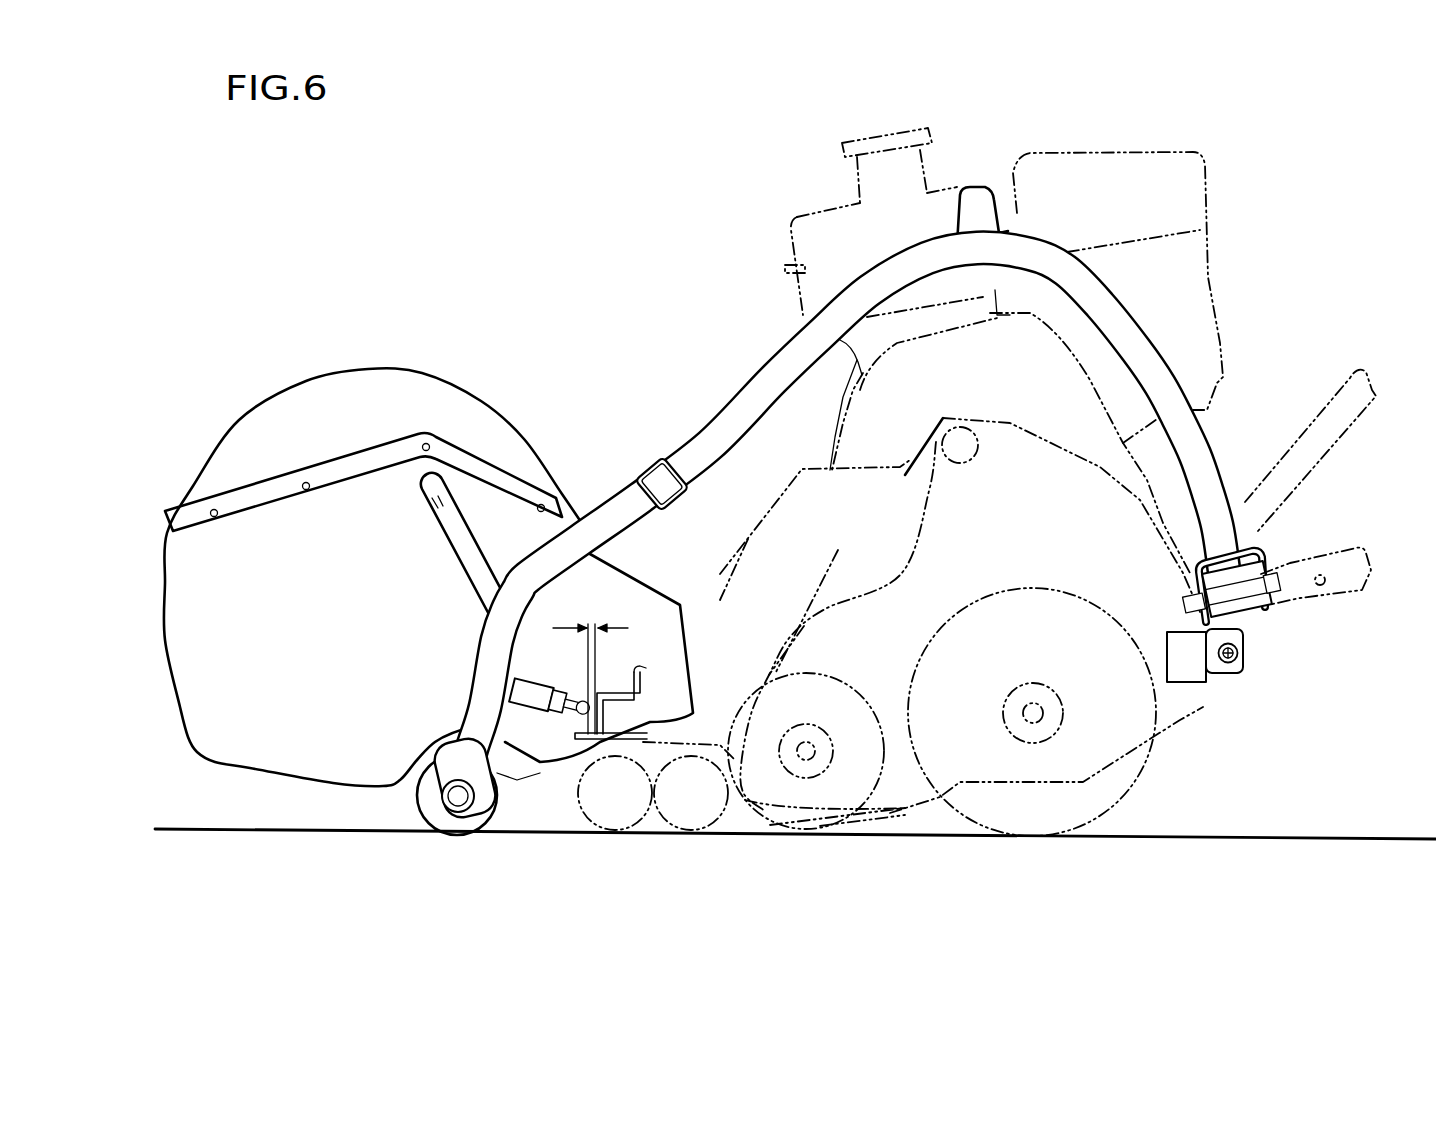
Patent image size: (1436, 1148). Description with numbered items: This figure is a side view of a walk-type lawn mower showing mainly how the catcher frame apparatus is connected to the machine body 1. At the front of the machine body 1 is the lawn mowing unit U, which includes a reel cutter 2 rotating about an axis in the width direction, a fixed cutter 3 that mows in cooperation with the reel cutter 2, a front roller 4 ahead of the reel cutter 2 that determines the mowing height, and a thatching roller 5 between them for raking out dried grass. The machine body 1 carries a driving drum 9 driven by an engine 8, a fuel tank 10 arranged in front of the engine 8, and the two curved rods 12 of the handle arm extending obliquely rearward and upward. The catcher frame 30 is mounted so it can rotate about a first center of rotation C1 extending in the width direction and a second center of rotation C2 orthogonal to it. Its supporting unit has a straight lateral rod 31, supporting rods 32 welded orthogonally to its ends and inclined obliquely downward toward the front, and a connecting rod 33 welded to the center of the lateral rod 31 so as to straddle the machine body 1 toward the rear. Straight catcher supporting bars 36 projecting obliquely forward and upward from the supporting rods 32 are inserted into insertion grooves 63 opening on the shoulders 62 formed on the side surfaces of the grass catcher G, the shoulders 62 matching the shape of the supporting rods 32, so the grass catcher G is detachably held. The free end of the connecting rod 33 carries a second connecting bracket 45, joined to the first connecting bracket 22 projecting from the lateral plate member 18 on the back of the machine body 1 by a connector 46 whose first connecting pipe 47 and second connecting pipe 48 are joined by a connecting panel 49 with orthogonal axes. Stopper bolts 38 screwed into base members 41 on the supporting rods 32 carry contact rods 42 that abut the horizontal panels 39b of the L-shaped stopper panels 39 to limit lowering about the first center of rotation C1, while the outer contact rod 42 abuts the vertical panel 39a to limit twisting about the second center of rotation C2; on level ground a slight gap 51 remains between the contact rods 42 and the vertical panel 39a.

The machine body 1 is at (751, 545).
The reel cutter 2 is at (760, 810).
The fixed cutter 3 is at (843, 827).
The front roller 4 is at (587, 812).
The thatching roller 5 is at (428, 797).
The engine 8 is at (1208, 190).
The driving drum 9 is at (1110, 810).
The fuel tank 10 is at (810, 207).
The rods 12 is at (1320, 427).
The lateral plate member 18 is at (1187, 683).
The first connecting bracket 22 is at (1235, 677).
The catcher frame 30 is at (680, 410).
The lateral rod 31 is at (648, 468).
The supporting rods 32 is at (593, 513).
The connecting rod 33 is at (960, 245).
The catcher supporting bars 36 is at (455, 530).
The stopper bolts 38 is at (573, 707).
The stopper panels 39 is at (610, 690).
The vertical panel 39a is at (640, 696).
The horizontal panels 39b is at (582, 742).
The base members 41 is at (530, 687).
The contact rod 42 is at (525, 785).
The second connecting bracket 45 is at (1245, 557).
The connector 46 is at (1334, 636).
The first connecting pipe 47 is at (1243, 669).
The second connecting pipe 48 is at (1261, 618).
The connecting panel 49 is at (1240, 660).
The gap 51 is at (593, 622).
The shoulders 62 is at (545, 505).
The insertion grooves 63 is at (437, 445).
The grass catcher G is at (338, 392).
The lawn mowing unit U is at (758, 818).
The first center of rotation C1 is at (1222, 674).
The second center of rotation C2 is at (1292, 590).